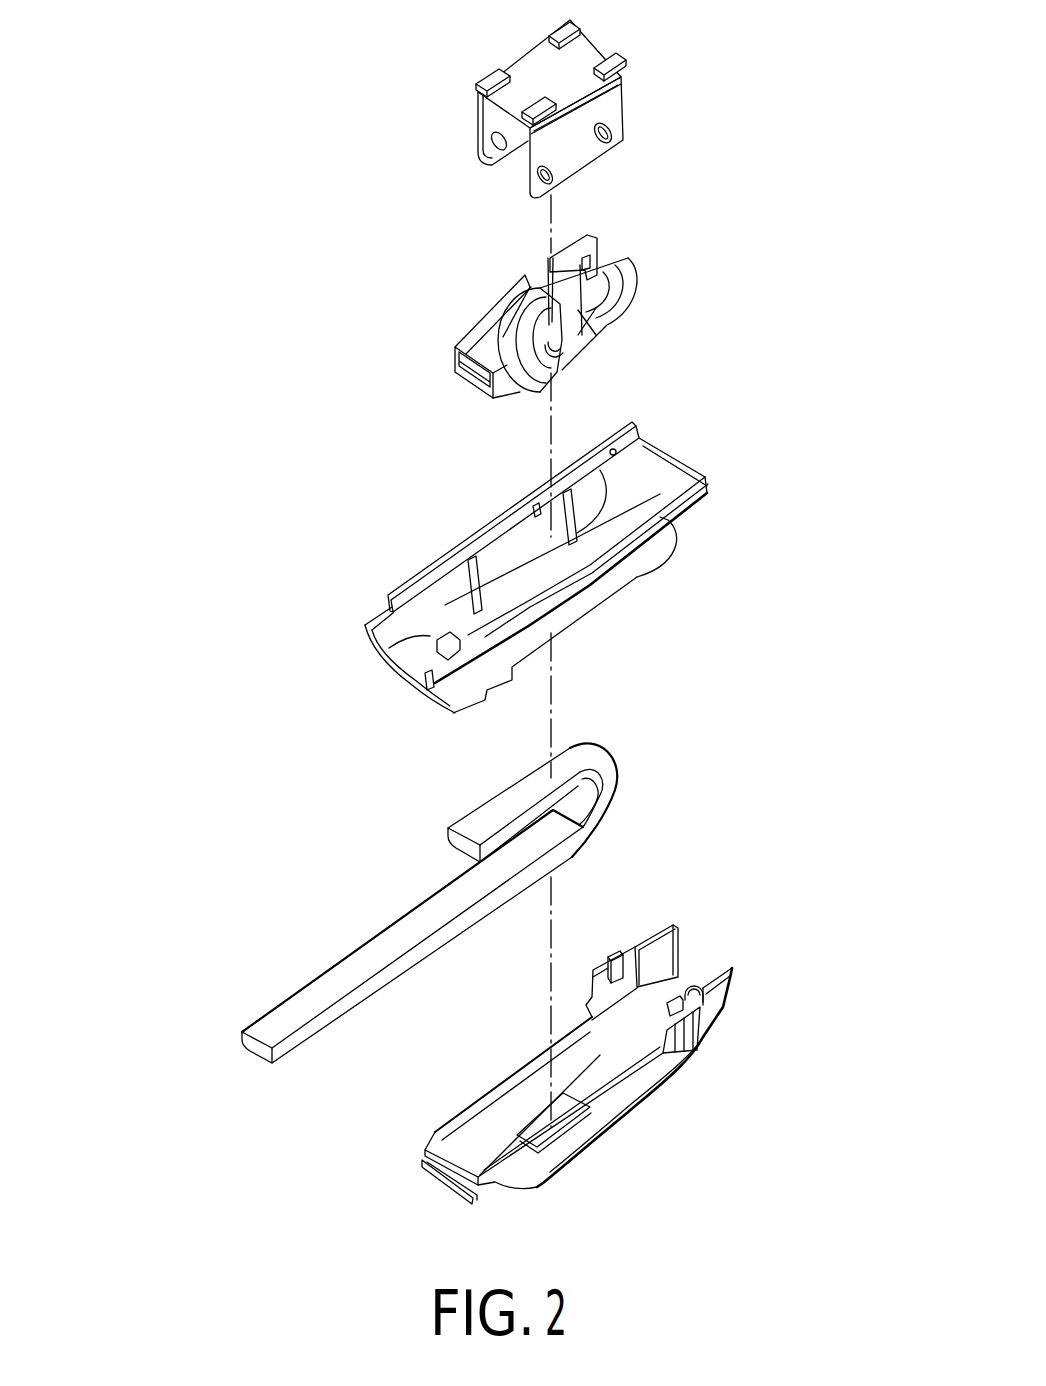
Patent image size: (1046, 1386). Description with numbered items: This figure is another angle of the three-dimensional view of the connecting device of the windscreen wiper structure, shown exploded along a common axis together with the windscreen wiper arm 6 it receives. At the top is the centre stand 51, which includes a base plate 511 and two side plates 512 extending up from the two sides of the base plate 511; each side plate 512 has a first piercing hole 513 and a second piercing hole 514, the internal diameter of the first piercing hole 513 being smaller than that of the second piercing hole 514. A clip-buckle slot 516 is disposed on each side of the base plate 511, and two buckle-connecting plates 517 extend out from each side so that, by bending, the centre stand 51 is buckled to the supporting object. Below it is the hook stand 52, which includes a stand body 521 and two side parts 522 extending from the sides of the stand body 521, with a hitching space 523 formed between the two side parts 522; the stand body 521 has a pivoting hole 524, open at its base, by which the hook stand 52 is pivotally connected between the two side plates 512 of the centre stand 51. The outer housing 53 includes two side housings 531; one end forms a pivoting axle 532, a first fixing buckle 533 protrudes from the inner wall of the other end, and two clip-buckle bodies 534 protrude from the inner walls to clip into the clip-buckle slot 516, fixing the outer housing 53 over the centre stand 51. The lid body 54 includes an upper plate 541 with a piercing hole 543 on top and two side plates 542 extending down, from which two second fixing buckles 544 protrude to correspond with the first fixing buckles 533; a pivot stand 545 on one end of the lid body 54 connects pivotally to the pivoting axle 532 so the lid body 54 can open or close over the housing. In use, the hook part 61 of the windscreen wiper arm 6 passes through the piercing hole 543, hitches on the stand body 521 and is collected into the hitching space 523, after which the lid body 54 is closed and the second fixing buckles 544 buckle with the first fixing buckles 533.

The centre stand 51 is at (528, 53).
The base plate 511 is at (488, 100).
The side plates 512 is at (615, 93).
The first piercing hole 513 is at (560, 173).
The second piercing hole 514 is at (613, 131).
The clip-buckle slot 516 is at (578, 110).
The buckle-connecting plates 517 is at (482, 77).
The hook stand 52 is at (460, 335).
The stand body 521 is at (505, 307).
The side parts 522 is at (628, 287).
The hitching space 523 is at (608, 257).
The pivoting hole 524 is at (588, 332).
The outer housing 53 is at (380, 613).
The side housings 531 is at (580, 605).
The pivoting axle 532 is at (392, 663).
The first fixing buckle 533 is at (640, 432).
The clip-buckle bodies 534 is at (498, 532).
The lid body 54 is at (707, 1040).
The upper plate 541 is at (618, 1063).
The side plates 542 is at (490, 1113).
The piercing hole 543 is at (553, 1140).
The second fixing buckles 544 is at (615, 945).
The pivot stand 545 is at (448, 1177).
The windscreen wiper arm 6 is at (256, 1057).
The hook part 61 is at (612, 785).